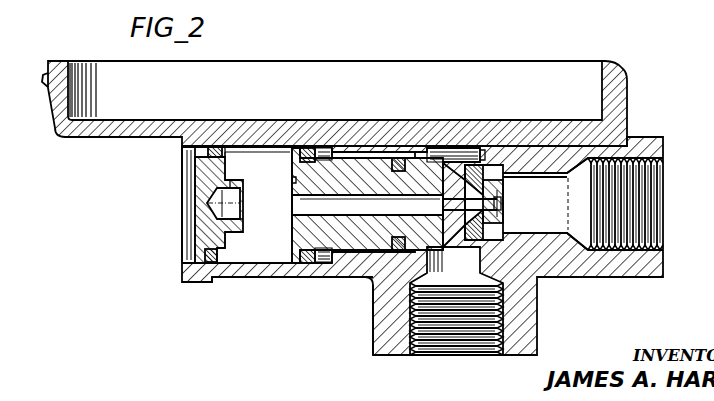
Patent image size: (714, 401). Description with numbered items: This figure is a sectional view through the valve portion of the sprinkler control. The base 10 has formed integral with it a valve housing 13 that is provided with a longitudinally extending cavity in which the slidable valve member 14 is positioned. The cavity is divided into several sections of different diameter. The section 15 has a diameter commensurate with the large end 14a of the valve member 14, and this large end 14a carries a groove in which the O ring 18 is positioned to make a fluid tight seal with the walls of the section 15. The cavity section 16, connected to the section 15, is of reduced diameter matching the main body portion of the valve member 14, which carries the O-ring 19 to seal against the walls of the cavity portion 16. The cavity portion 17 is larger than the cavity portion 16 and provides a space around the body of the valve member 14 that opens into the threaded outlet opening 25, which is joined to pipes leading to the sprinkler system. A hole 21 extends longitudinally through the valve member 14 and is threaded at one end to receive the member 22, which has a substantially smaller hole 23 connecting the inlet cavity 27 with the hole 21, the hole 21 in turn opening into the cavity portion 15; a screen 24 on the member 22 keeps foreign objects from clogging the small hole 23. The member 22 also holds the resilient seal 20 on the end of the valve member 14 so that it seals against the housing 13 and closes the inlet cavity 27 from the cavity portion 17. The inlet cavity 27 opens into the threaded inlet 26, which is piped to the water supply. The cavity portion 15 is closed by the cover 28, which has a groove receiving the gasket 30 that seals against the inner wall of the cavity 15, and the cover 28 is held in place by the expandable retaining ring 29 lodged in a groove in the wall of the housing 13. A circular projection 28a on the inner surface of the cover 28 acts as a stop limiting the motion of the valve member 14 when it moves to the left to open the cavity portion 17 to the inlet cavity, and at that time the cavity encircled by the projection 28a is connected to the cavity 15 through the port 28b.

The base 10 is at (88, 137).
The valve housing 13 is at (316, 278).
The valve member 14 is at (360, 250).
The large end 14a is at (296, 179).
The cavity section 15 is at (265, 255).
The cavity section 16 is at (370, 160).
The cavity portion 17 is at (452, 150).
The O ring 18 is at (303, 147).
The O-ring 19 is at (404, 158).
The seal 20 is at (503, 173).
The hole 21 is at (388, 215).
The member 22 is at (497, 224).
The hole 23 is at (500, 213).
The screen 24 is at (501, 199).
The threaded outlet opening 25 is at (446, 340).
The threaded inlet 26 is at (665, 176).
The inlet cavity 27 is at (570, 173).
The cover 28 is at (202, 222).
The circular projection 28a is at (243, 226).
The port 28b is at (243, 190).
The expandable retaining ring 29 is at (200, 262).
The gasket 30 is at (203, 278).